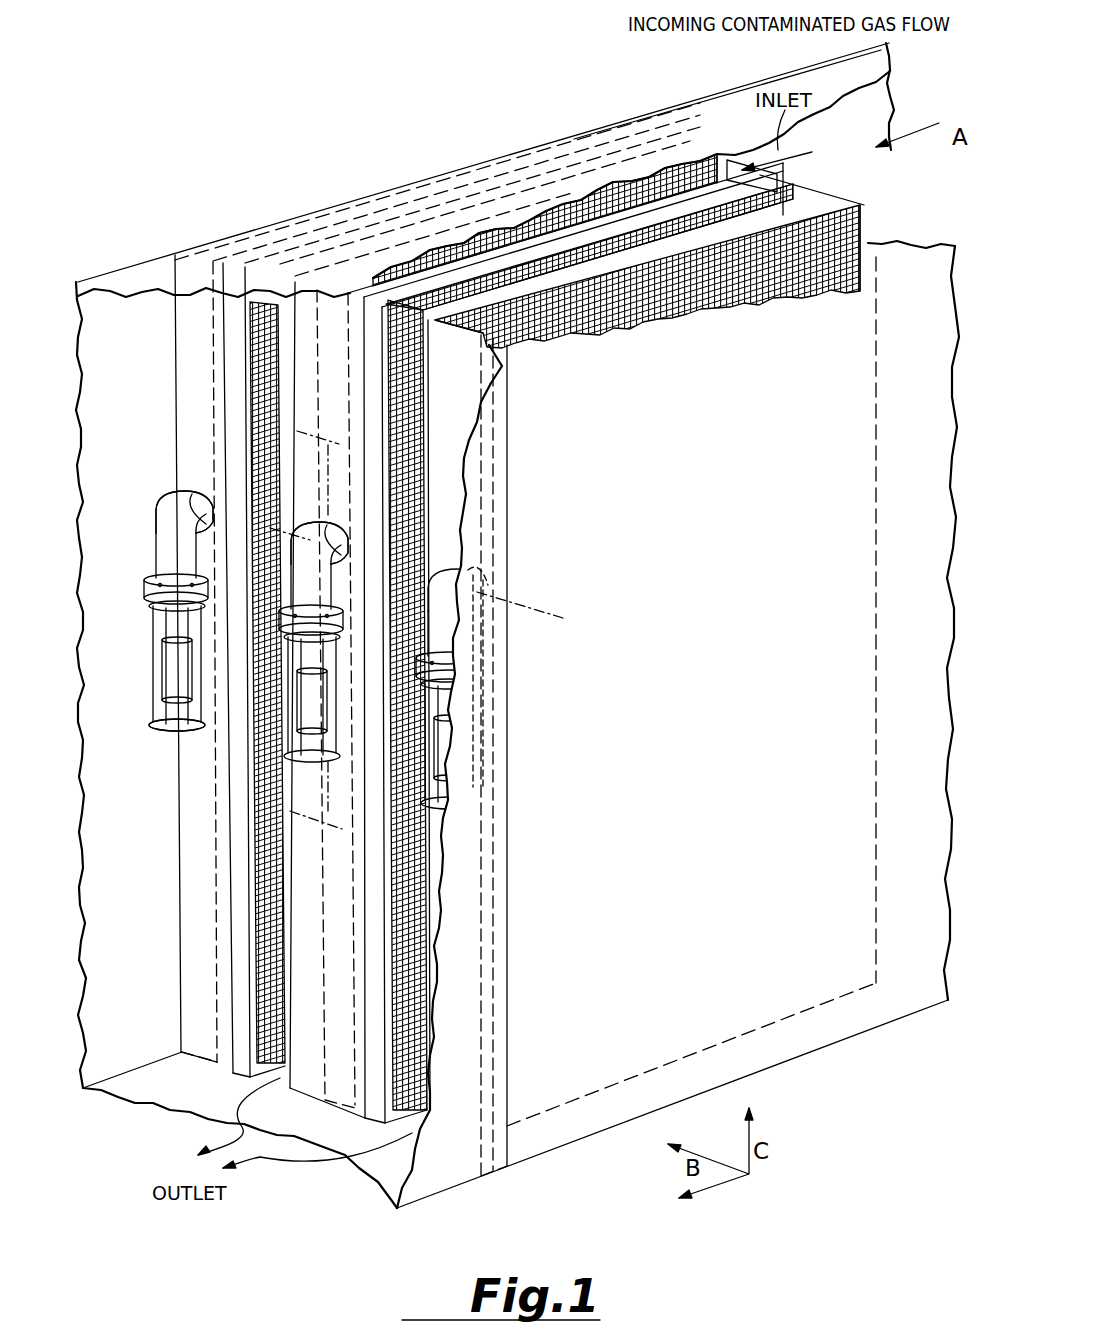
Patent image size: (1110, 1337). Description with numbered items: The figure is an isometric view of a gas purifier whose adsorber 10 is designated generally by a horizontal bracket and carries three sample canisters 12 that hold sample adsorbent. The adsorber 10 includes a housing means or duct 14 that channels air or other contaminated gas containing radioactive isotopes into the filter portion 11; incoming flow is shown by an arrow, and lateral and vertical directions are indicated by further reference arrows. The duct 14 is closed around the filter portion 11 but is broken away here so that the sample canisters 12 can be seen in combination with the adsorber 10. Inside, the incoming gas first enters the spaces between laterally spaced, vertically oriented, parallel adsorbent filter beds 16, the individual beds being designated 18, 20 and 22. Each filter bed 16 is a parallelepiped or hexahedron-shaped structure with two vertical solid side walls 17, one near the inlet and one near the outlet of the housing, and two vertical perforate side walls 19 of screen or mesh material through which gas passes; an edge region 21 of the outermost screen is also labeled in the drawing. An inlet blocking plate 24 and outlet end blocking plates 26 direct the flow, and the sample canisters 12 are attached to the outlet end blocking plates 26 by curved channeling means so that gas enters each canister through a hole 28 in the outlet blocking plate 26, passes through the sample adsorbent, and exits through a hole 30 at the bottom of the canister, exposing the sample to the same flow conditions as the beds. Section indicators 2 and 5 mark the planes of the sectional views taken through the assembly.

The adsorber 10 is at (588, 124).
The filter portion 11 is at (672, 449).
The sample canister 12 is at (350, 660).
The duct 14 is at (440, 1195).
The adsorbent filter bed 16 is at (868, 204).
The solid side wall 17 is at (370, 327).
The particulate adsorbent filter bed 18 is at (678, 211).
The perforate side wall 19 is at (590, 339).
The particulate adsorbent filter bed 20 is at (612, 193).
The screen edge 21 is at (855, 258).
The particulate adsorbent filter bed 22 is at (599, 264).
The inlet blocking plate 24 is at (687, 153).
The outlet end blocking plate 26 is at (208, 1012).
The hole 28 is at (175, 512).
The hole 30 is at (161, 731).
The section line 2- 2 is at (288, 528).
The section line 5- 5 is at (310, 436).